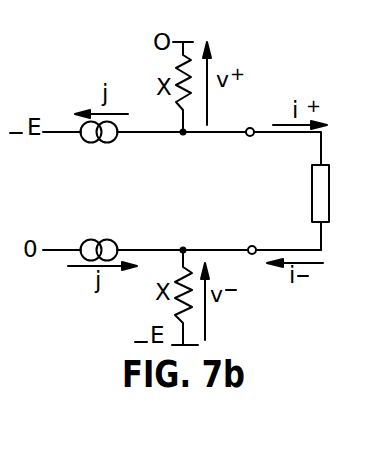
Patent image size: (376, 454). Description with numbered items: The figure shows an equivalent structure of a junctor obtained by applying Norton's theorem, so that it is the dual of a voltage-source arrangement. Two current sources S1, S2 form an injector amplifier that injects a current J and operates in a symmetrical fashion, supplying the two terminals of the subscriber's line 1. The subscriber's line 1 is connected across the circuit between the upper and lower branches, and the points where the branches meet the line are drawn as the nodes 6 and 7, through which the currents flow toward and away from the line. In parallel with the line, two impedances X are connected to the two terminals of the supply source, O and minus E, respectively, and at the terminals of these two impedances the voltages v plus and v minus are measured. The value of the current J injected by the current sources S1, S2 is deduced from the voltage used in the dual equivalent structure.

The subscriber's line 1 is at (317, 185).
The positive output node 6 is at (252, 128).
The negative output node 7 is at (253, 254).
The current source S1 is at (89, 143).
The current source S2 is at (97, 239).